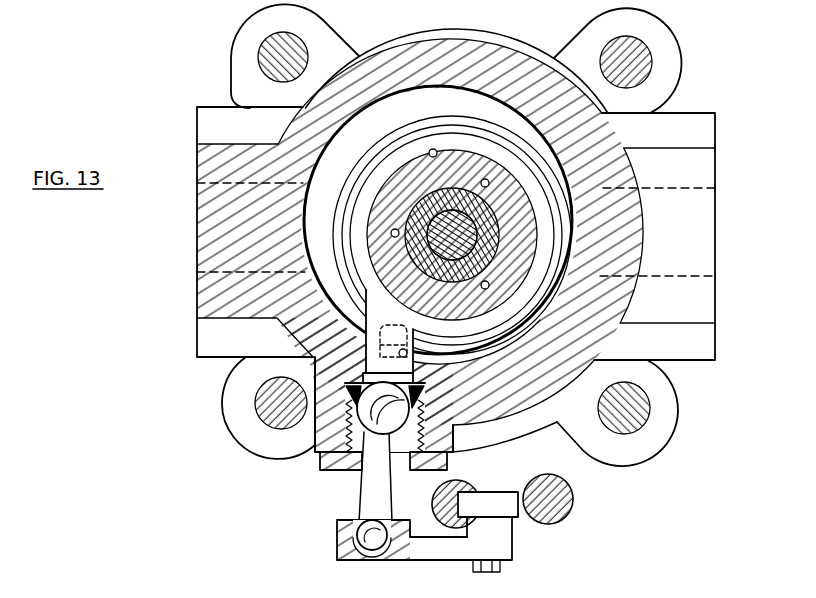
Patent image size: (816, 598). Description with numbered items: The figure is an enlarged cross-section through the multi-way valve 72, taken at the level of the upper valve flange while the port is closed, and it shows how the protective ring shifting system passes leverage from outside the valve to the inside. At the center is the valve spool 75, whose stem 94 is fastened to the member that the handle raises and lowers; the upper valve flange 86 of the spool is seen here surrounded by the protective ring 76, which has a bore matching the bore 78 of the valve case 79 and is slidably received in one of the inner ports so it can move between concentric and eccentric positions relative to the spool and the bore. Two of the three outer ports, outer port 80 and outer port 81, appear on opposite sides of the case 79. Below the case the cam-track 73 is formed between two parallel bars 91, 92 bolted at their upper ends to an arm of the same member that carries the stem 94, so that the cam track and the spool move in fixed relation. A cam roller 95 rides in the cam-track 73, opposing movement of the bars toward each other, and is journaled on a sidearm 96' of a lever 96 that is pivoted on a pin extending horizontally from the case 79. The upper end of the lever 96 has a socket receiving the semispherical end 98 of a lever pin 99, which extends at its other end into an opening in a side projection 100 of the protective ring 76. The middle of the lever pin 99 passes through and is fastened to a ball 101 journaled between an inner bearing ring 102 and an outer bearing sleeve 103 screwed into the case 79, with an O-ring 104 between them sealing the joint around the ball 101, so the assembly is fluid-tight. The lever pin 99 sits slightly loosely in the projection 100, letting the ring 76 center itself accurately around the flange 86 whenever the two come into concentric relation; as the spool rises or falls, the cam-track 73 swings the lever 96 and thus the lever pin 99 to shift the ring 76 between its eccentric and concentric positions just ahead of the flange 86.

The multi-way valve 72 is at (202, 95).
The cam-track 73 is at (505, 489).
The valve spool 75 is at (473, 150).
The protective ring 76 is at (402, 150).
The bore 78 is at (433, 149).
The valve case 79 is at (530, 63).
The outer port 80 is at (197, 232).
The outer port 81 is at (716, 191).
The valve flange 86 is at (505, 215).
The bar 91 is at (440, 492).
The bar 92 is at (572, 498).
The stem 94 is at (478, 240).
The cam roller 95 is at (510, 497).
The lever 96 is at (446, 544).
The sidearm 96' is at (438, 567).
The semispherical end 98 is at (372, 560).
The lever pin 99 is at (366, 497).
The side projection 100 is at (362, 316).
The ball 101 is at (365, 473).
The inner bearing ring 102 is at (340, 395).
The outer bearing sleeve 103 is at (318, 462).
The O-ring 104 is at (343, 410).